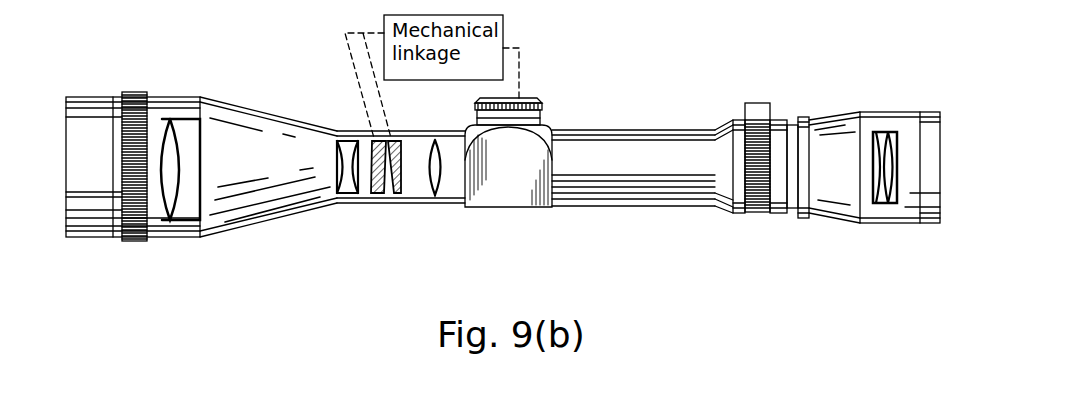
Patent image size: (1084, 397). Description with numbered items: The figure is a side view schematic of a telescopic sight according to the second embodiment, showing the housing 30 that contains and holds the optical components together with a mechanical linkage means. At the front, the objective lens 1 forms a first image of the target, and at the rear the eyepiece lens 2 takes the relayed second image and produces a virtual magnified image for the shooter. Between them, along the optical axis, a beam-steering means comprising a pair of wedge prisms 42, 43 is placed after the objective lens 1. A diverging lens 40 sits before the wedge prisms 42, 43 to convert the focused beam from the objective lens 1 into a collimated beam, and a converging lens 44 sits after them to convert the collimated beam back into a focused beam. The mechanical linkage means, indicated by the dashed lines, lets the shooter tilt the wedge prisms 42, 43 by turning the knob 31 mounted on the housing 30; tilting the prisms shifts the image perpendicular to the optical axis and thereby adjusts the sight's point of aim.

The objective lens 1 is at (180, 218).
The eyepiece lens 2 is at (885, 203).
The housing 30 is at (503, 166).
The knob 31 is at (537, 100).
The diverging lens 40 is at (340, 198).
The wedge prism 42 is at (383, 197).
The wedge prism 43 is at (397, 197).
The converging lens 44 is at (433, 195).